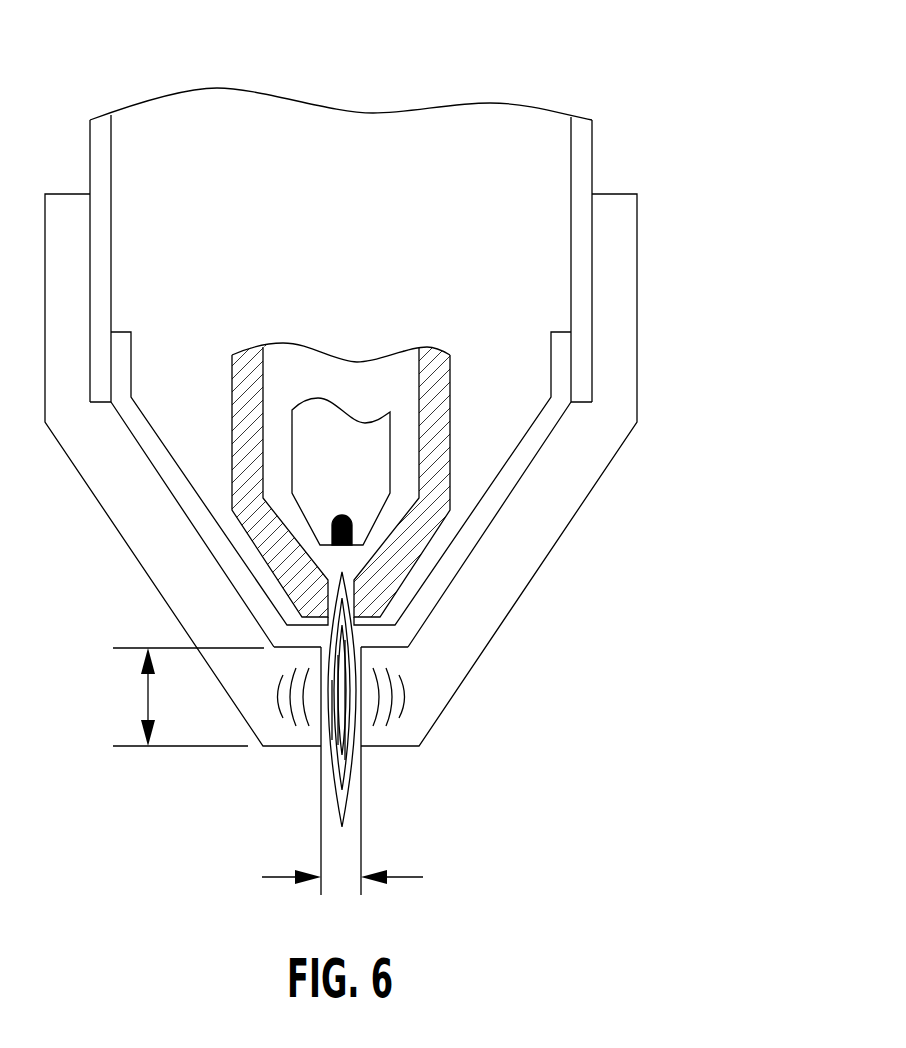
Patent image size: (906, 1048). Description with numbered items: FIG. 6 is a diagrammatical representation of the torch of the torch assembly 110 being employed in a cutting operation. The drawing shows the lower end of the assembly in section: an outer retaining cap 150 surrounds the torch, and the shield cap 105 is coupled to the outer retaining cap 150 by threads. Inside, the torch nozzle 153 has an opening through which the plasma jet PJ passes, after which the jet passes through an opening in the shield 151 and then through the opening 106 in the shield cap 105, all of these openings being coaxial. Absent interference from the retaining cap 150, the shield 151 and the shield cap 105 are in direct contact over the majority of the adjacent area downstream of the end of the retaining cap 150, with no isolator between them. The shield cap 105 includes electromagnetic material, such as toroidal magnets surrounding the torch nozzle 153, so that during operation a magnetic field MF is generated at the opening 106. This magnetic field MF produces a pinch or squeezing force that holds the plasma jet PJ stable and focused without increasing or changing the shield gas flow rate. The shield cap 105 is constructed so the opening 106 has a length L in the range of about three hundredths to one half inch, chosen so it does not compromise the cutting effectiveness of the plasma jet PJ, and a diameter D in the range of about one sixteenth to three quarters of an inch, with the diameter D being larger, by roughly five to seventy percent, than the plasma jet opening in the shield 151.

The torch assembly 110 is at (696, 136).
The shield cap 105 is at (595, 488).
The outer retaining cap 150 is at (591, 158).
The shield 151 is at (513, 493).
The torch nozzle 153 is at (449, 378).
The opening 106 is at (323, 745).
The plasma jet PJ is at (353, 753).
The magnetic field MF is at (405, 689).
The length L is at (188, 697).
The diameter D is at (342, 820).